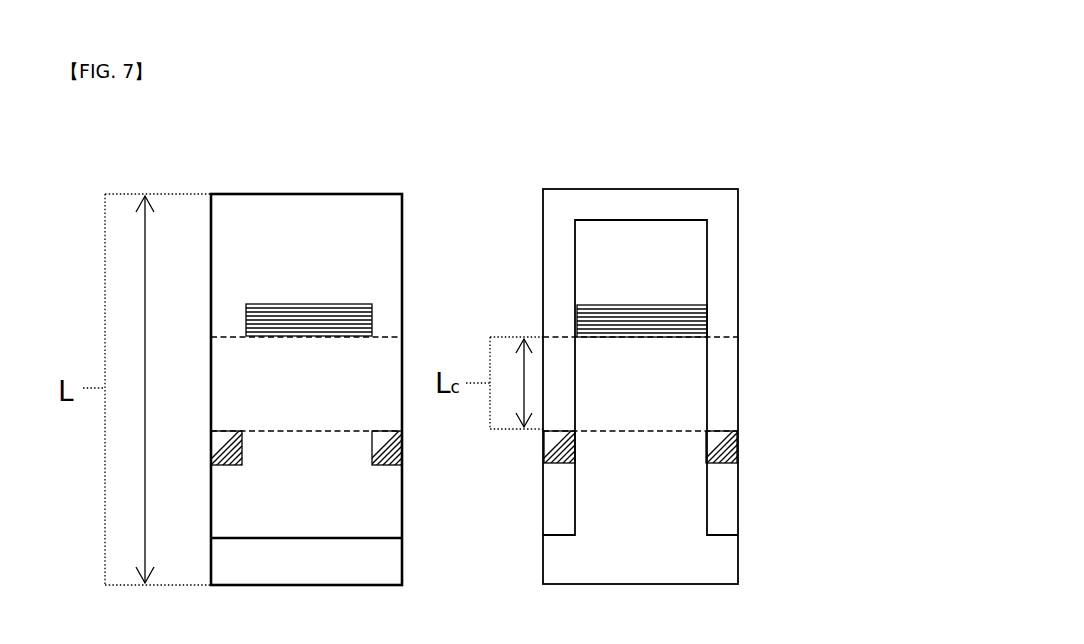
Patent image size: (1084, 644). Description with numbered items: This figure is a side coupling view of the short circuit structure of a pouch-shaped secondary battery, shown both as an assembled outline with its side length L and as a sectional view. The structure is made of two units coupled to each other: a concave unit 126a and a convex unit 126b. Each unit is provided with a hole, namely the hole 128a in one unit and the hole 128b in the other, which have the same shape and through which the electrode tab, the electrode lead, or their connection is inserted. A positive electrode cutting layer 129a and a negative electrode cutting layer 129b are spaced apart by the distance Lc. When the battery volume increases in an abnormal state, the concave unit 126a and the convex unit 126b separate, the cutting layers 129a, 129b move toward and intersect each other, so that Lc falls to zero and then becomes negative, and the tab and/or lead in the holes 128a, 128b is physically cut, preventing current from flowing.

The concave unit 126a is at (730, 231).
The convex unit 126b is at (730, 561).
The hole 128a is at (730, 367).
The hole 128b is at (659, 412).
The positive electrode cutting layer 129a is at (718, 320).
The negative electrode cutting layer 129b is at (749, 447).